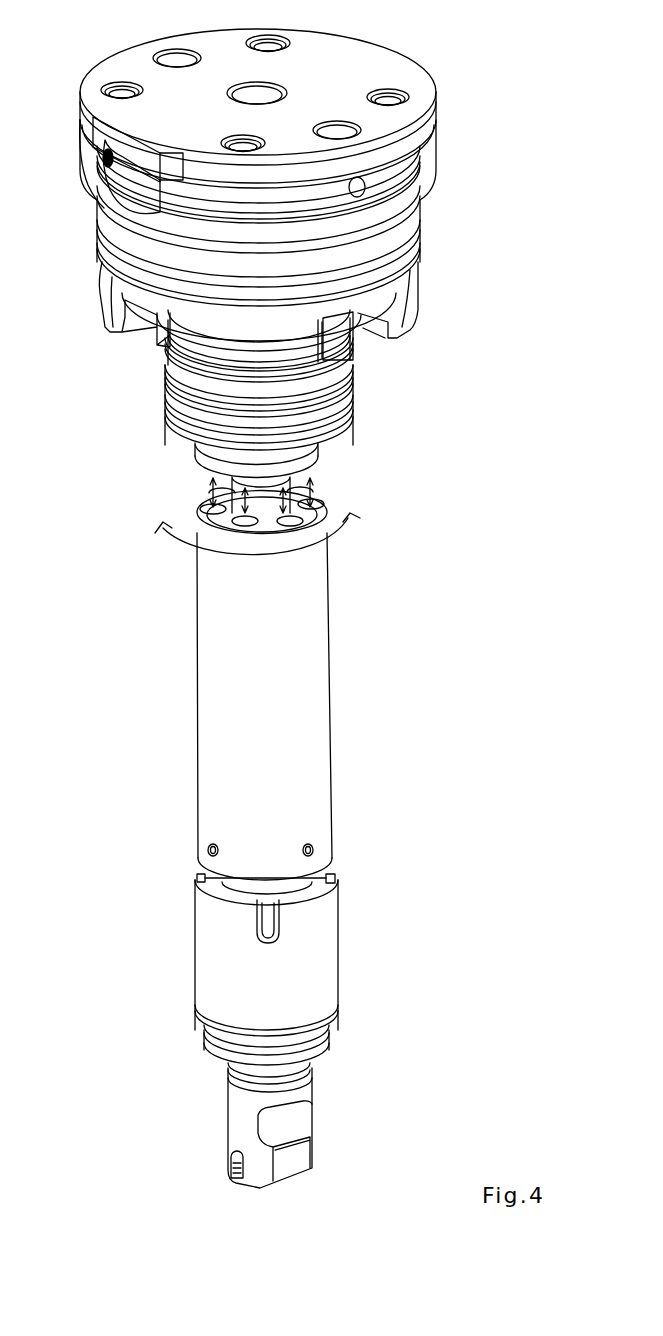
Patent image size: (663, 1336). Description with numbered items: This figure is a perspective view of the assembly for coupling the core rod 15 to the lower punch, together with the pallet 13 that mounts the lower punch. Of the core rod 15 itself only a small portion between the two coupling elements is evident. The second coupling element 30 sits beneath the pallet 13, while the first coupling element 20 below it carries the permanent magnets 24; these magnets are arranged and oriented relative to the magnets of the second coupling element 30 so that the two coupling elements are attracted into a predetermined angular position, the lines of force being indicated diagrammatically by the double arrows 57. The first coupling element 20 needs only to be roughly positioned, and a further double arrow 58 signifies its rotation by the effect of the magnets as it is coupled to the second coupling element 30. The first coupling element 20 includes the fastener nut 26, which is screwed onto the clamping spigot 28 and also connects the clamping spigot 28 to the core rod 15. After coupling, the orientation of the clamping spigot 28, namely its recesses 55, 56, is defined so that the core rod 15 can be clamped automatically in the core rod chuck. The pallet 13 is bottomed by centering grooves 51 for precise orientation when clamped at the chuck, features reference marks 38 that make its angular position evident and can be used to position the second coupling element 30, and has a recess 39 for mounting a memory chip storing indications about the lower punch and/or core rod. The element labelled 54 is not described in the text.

The pallet 13 is at (482, 202).
The core rod 15 is at (262, 505).
The first coupling element 20 is at (352, 746).
The permanent magnets 24 is at (309, 512).
The fastener nut 26 is at (322, 965).
The clamping spigot 28 is at (338, 1134).
The second coupling element 30 is at (382, 397).
The reference marks 38 is at (172, 170).
The recess 39 is at (128, 196).
The centering grooves 51 is at (146, 346).
The top plate 54 is at (453, 142).
The recess 55 is at (228, 1167).
The recess 56 is at (270, 1125).
The double arrows 57 is at (335, 490).
The double arrow 58 is at (229, 562).